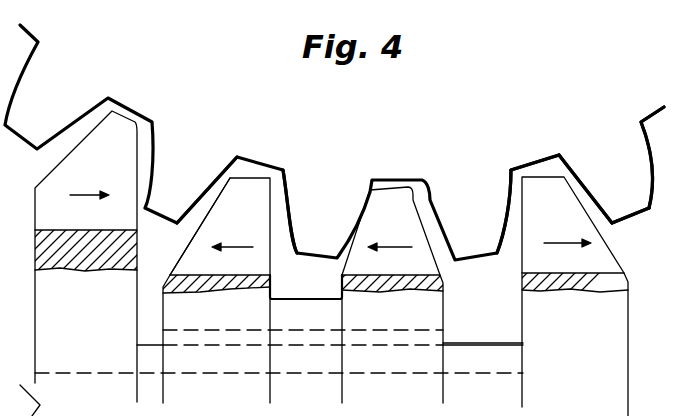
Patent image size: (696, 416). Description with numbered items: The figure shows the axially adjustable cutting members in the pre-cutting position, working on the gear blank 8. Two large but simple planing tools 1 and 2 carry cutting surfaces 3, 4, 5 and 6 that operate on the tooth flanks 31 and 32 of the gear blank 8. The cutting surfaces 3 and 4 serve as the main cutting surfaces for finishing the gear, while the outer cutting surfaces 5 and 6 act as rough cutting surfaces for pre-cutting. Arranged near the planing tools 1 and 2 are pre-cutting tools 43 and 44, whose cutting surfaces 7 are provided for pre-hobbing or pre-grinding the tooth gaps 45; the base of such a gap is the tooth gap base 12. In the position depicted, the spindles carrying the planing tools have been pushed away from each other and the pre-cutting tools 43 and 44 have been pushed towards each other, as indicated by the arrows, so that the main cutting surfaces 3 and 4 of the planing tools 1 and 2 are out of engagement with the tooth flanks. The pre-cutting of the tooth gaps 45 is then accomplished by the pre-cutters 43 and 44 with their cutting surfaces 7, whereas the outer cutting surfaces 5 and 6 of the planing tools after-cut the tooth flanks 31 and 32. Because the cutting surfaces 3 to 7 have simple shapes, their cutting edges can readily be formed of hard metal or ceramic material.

The planing tool 1 is at (247, 203).
The planing tool 2 is at (546, 203).
The cutting surface 3 is at (273, 208).
The cutting surface 4 is at (519, 190).
The cutting surface 5 is at (212, 200).
The cutting surface 6 is at (591, 208).
The cutting surface 7 is at (144, 186).
The gear blank 8 is at (222, 73).
The tooth gap base 12 is at (532, 160).
The tooth flank 31 is at (597, 210).
The tooth flank 32 is at (192, 213).
The pre-cutting tool 43 is at (65, 178).
The pre-cutting tool 44 is at (410, 228).
The tooth gap 45 is at (667, 140).